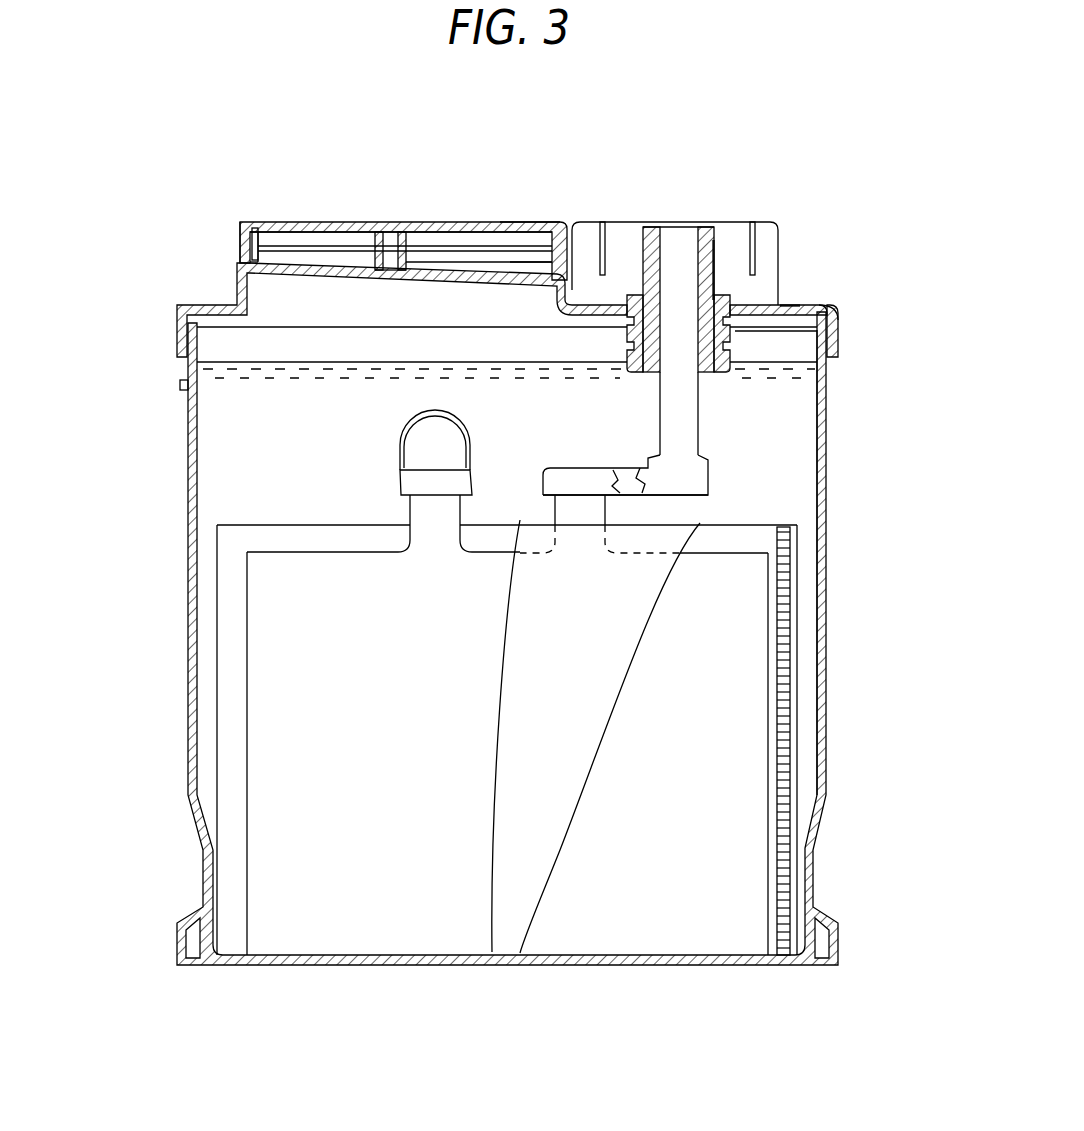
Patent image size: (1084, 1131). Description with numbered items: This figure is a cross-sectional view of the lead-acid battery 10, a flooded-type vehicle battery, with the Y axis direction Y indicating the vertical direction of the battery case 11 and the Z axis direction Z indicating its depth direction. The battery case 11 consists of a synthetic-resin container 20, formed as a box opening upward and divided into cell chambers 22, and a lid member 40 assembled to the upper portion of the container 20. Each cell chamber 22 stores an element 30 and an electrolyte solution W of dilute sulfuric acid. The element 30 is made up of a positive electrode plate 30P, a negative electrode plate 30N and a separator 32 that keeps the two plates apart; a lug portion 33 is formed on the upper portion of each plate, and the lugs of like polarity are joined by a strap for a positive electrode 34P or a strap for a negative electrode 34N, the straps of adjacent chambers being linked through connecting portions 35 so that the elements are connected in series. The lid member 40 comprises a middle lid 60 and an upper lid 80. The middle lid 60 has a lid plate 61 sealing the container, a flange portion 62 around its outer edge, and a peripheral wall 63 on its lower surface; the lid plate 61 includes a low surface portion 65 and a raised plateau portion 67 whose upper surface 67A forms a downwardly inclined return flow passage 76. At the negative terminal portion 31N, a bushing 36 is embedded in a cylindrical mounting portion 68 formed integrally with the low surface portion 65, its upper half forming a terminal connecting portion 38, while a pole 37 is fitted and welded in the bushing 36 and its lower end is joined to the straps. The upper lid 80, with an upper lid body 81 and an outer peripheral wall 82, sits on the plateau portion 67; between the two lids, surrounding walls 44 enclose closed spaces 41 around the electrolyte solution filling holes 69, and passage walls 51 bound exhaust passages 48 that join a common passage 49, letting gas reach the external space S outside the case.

The lead-acid battery 10 is at (826, 256).
The battery case 11 is at (110, 237).
The container 20 is at (190, 376).
The cell chamber 22 is at (803, 468).
The element 30 is at (587, 1026).
The positive electrode plate 30P is at (447, 930).
The negative electrode plate 30N is at (590, 920).
The separator 32 is at (517, 930).
The lug portion 33 is at (427, 512).
The strap for a positive electrode 34P is at (427, 480).
The strap for a negative electrode 34N is at (580, 480).
The connecting portion 35 is at (522, 240).
The bushing 36 is at (650, 262).
The pole 37 is at (685, 385).
The terminal connecting portion 38 is at (718, 224).
The negative terminal portion 31N is at (718, 258).
The lid member 40 is at (147, 210).
The closed space 41 is at (353, 235).
The surrounding wall 44 is at (262, 240).
The exhaust passage 48 is at (490, 240).
The common passage 49 is at (396, 228).
The passage wall 51 is at (506, 228).
The middle lid 60 is at (213, 300).
The lid plate 61 is at (526, 267).
The flange portion 62 is at (827, 326).
The peripheral wall 63 is at (830, 305).
The low surface portion 65 is at (790, 300).
The plateau portion 67 is at (157, 410).
The upper surface of the plateau portion 67A is at (406, 238).
The cylindrical mounting portion 68 is at (722, 334).
The electrolyte solution filling hole 69 is at (308, 266).
The return flow passage 76 is at (437, 425).
The upper lid 80 is at (240, 240).
The upper lid body 81 is at (371, 248).
The outer peripheral wall 82 is at (583, 222).
The electrolyte solution W is at (788, 406).
The external space S is at (142, 596).
The Y axis direction Y is at (866, 1087).
The Z axis direction Z is at (866, 1087).